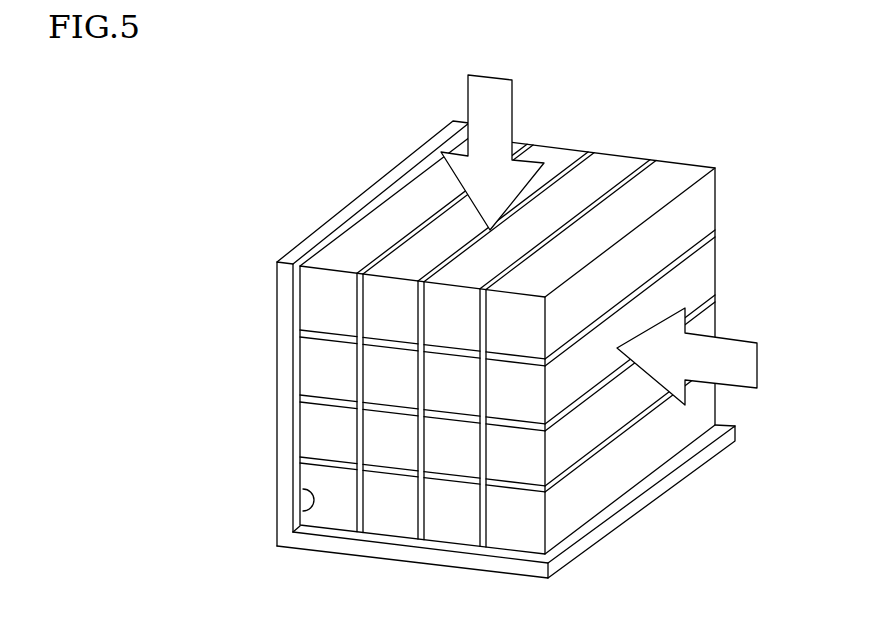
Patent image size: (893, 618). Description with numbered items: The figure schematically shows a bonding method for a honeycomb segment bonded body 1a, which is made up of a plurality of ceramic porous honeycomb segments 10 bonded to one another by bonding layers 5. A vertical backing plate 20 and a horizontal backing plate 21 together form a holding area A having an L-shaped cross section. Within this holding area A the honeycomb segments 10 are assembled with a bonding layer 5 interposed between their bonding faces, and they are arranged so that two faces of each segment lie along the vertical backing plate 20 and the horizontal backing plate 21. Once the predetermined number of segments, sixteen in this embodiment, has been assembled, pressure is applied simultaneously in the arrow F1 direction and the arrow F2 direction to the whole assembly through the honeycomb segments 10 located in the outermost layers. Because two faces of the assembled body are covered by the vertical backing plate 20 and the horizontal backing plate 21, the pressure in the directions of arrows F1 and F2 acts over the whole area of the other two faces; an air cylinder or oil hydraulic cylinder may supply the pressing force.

The honeycomb segment bonded body 1a is at (647, 125).
The honeycomb segment 10 is at (677, 173).
The bonding layer 5 is at (520, 488).
The vertical backing plate 20 is at (290, 323).
The horizontal backing plate 21 is at (379, 550).
The holding area A is at (303, 511).
The arrow F1 direction F1 is at (498, 82).
The arrow F2 direction F2 is at (742, 342).